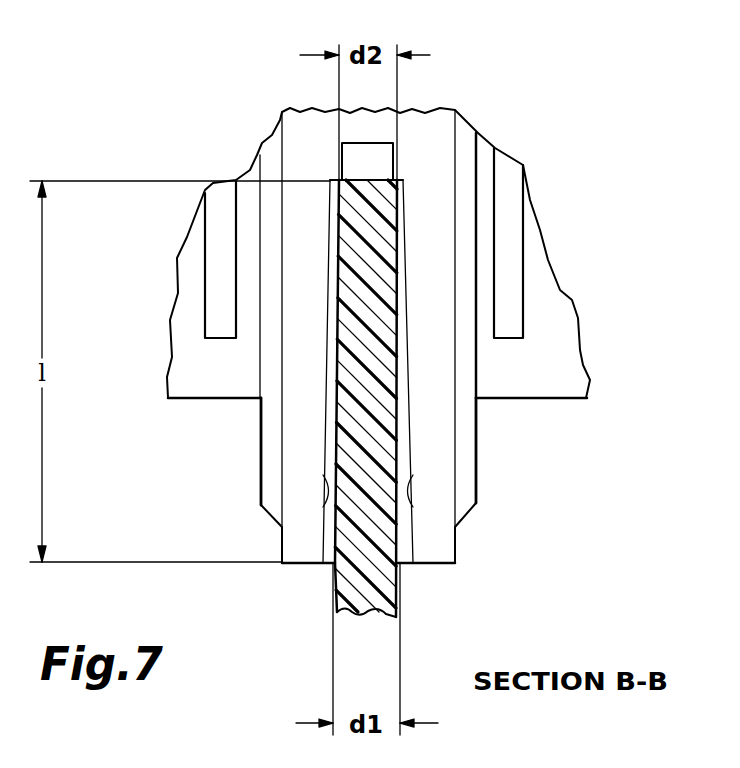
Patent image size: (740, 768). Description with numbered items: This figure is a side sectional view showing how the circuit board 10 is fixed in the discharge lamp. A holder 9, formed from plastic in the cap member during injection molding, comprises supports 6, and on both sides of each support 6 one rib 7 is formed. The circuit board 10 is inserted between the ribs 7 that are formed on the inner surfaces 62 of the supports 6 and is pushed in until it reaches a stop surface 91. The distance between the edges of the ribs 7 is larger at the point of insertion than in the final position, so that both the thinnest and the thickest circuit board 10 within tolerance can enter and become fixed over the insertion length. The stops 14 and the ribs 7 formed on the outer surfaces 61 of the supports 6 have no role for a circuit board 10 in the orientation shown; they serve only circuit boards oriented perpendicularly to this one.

The holder 9 is at (305, 137).
The stop surface 91 is at (378, 156).
The stops 14 is at (216, 230).
The support 6 is at (295, 410).
The outer surface 61 is at (282, 443).
The rib 7 is at (268, 497).
The inner surface 62 is at (326, 507).
The circuit board 10 is at (372, 616).